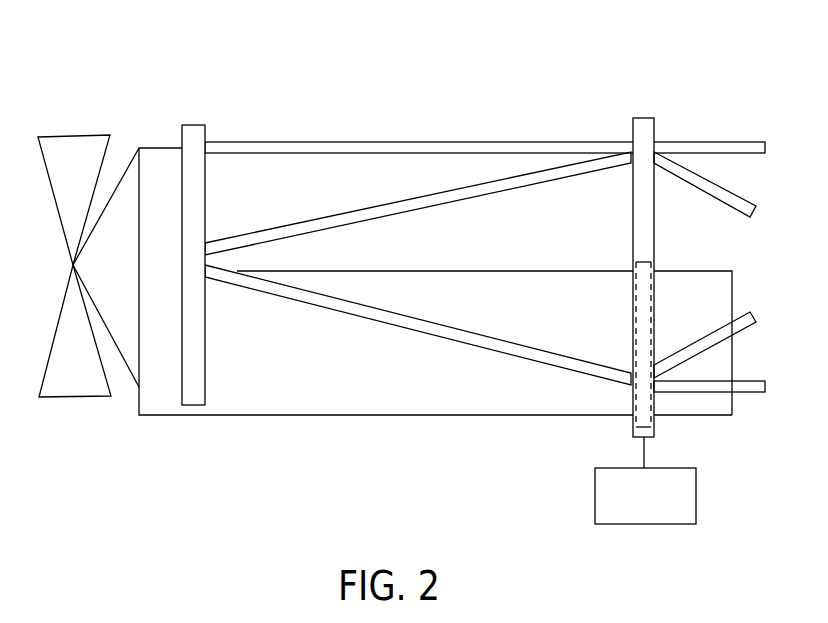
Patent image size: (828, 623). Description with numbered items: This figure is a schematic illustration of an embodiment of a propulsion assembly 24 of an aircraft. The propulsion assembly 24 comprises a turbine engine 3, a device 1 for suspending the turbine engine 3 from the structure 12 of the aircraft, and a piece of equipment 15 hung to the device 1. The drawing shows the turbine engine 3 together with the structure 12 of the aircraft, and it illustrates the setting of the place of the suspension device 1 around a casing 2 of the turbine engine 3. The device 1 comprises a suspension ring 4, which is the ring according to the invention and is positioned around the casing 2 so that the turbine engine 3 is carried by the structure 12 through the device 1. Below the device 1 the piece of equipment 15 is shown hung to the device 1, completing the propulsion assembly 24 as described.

The suspension device 1 is at (657, 402).
The casing 2 is at (657, 267).
The turbine engine 3 is at (335, 386).
The suspension ring 4 is at (666, 287).
The structure 12 is at (451, 133).
The piece of equipment 15 is at (595, 505).
The propulsion assembly 24 is at (597, 442).